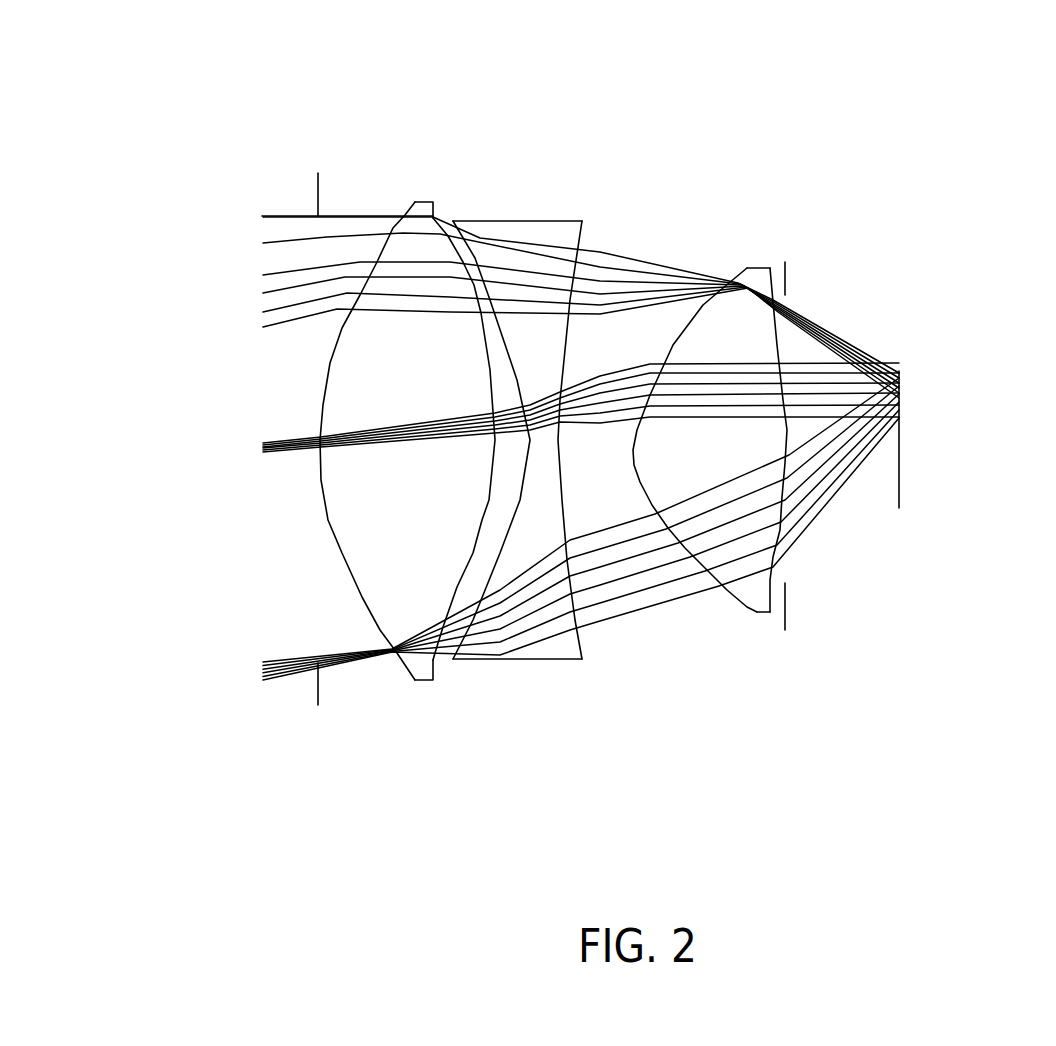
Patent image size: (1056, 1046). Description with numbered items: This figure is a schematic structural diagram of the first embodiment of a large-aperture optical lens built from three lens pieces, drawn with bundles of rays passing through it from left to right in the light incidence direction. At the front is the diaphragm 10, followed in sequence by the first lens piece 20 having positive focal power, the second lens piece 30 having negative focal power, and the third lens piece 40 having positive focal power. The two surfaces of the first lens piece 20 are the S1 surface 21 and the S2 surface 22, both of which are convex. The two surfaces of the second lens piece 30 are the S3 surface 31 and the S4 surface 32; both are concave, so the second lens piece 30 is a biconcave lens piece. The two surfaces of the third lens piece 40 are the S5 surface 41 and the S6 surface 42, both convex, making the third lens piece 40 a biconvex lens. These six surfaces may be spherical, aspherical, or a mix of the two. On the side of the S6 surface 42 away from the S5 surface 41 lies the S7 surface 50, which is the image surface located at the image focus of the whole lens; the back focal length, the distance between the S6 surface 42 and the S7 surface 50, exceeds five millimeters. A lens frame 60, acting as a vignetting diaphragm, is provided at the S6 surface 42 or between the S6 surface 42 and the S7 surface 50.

The diaphragm 10 is at (318, 690).
The first lens piece 20 is at (363, 447).
The S1 surface 21 is at (360, 603).
The S2 surface 22 is at (478, 313).
The second lens piece 30 is at (434, 458).
The S3 surface 31 is at (492, 535).
The S4 surface 32 is at (582, 317).
The third lens piece 40 is at (546, 496).
The S5 surface 41 is at (633, 453).
The S6 surface 42 is at (788, 342).
The S7 surface 50 is at (903, 475).
The lens frame 60 is at (785, 268).